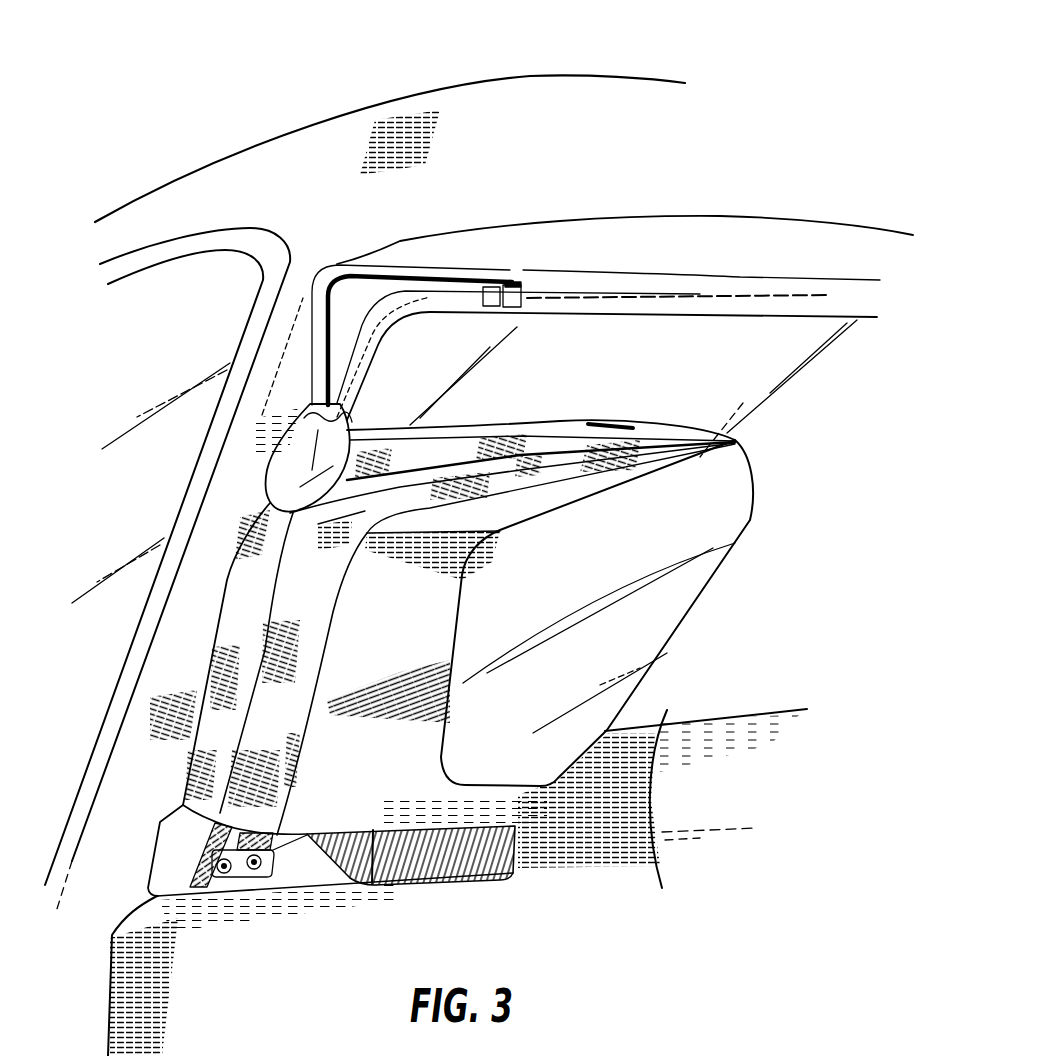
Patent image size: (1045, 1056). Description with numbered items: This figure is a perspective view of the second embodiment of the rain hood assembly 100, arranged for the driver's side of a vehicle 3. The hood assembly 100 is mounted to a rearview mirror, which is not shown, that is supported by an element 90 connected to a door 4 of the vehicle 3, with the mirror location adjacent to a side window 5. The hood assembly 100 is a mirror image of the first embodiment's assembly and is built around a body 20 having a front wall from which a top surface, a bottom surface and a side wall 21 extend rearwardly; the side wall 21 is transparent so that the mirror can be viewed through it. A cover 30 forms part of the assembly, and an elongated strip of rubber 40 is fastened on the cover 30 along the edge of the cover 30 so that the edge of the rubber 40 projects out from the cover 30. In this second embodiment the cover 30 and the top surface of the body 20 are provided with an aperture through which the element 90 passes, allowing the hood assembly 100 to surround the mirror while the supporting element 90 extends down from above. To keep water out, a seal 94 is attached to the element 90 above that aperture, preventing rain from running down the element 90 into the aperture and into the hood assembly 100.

The vehicle 3 is at (557, 72).
The door 4 is at (662, 294).
The side window 5 is at (662, 813).
The body 20 is at (673, 440).
The side wall 21 is at (672, 617).
The cover 30 is at (632, 428).
The rubber strip 40 is at (505, 425).
The element 90 is at (322, 304).
The seal 94 is at (272, 470).
The rain hood assembly 100 is at (764, 506).